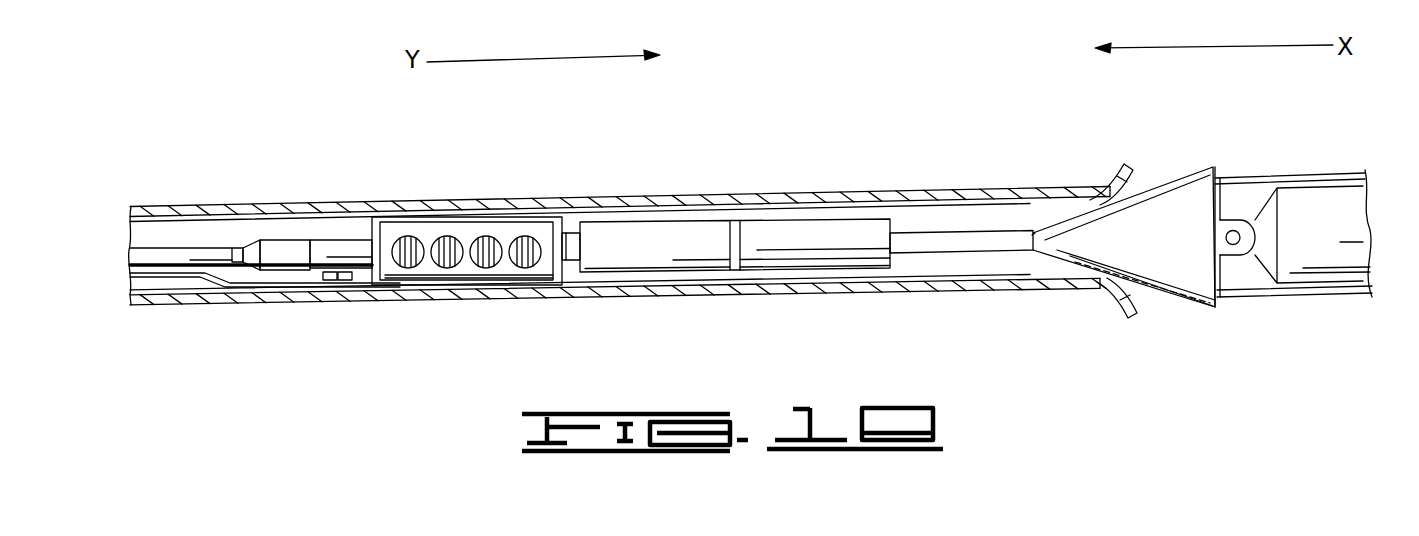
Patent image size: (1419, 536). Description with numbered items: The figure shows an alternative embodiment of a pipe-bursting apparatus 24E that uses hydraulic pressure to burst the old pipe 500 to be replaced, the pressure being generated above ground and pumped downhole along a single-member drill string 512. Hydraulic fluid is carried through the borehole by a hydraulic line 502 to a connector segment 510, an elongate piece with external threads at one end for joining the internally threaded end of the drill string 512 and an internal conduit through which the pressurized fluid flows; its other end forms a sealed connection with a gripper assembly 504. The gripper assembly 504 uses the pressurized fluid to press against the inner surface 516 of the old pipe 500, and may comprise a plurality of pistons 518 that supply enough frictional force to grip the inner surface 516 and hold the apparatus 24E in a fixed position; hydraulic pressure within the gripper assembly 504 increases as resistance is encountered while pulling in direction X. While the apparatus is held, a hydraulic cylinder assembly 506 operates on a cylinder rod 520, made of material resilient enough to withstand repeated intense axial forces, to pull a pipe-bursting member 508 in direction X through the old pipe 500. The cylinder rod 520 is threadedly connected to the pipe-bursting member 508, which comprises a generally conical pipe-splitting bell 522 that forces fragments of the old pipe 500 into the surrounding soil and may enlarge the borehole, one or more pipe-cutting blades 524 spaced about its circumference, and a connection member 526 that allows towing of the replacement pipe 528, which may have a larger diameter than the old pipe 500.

The pipe-bursting apparatus 24E is at (670, 135).
The old pipe 500 is at (857, 297).
The hydraulic line 502 is at (283, 288).
The gripper assembly 504 is at (427, 290).
The hydraulic cylinder assembly 506 is at (824, 270).
The pipe-bursting member 508 is at (1058, 290).
The connector segment 510 is at (345, 238).
The single-member drill string 512 is at (267, 240).
The inner surface 516 is at (604, 286).
The pistons 518 is at (462, 264).
The cylinder rod 520 is at (917, 233).
The pipe-splitting bell 522 is at (1227, 282).
The pipe-cutting blades 524 is at (1178, 167).
The connection member 526 is at (1234, 220).
The replacement pipe 528 is at (1318, 288).